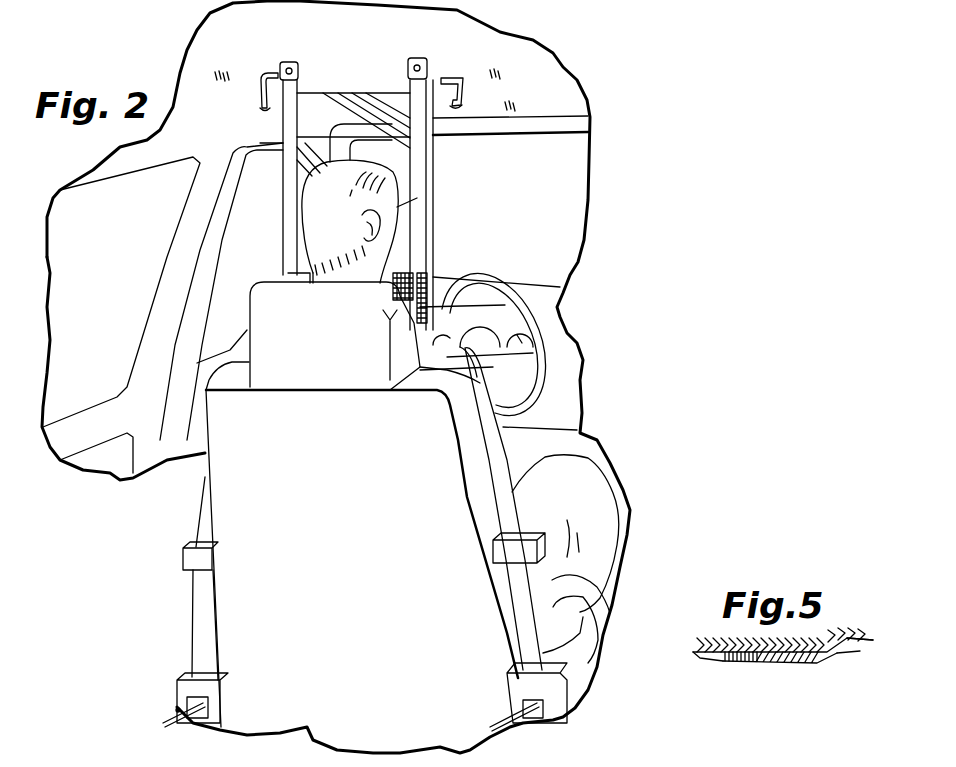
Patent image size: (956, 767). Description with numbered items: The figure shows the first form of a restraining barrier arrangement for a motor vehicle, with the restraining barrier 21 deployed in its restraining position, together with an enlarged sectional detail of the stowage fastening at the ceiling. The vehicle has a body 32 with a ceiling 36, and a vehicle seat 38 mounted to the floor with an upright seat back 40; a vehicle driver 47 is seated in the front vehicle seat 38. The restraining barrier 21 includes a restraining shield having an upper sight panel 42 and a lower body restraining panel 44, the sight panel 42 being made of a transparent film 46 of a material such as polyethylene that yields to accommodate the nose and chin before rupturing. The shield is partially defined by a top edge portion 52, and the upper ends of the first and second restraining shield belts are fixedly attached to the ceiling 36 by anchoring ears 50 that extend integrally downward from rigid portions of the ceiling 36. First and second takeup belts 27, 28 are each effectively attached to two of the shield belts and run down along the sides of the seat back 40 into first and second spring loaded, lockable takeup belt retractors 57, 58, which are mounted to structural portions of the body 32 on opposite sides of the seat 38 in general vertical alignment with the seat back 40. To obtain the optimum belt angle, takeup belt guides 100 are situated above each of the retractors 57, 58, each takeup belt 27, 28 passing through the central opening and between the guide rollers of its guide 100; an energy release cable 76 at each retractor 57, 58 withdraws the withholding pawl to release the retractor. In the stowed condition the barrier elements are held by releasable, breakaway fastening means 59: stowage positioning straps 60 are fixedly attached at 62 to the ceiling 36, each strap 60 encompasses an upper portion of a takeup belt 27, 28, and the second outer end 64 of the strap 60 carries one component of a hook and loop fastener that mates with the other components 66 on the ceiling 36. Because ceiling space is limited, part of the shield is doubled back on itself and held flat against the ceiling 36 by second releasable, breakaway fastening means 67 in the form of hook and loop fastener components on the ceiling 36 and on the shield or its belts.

In FIG. 2, the restraining barrier 21 is at (287, 213).
In FIG. 2, the first takeup belt 27 is at (200, 605).
In FIG. 5, the first takeup belt 27 is at (757, 662).
In FIG. 2, the second takeup belt 28 is at (510, 514).
In FIG. 2, the body 32 is at (557, 330).
In FIG. 2, the ceiling 36 is at (560, 100).
In FIG. 5, the ceiling 36 is at (830, 646).
In FIG. 2, the vehicle seat 38 is at (607, 630).
In FIG. 2, the seat back 40 is at (228, 466).
In FIG. 2, the sight panel 42 is at (313, 104).
In FIG. 2, the lower body restraining panel 44 is at (487, 147).
In FIG. 2, the transparent film 46 is at (367, 104).
In FIG. 2, the vehicle driver 47 is at (390, 182).
In FIG. 2, the anchoring ears 50 is at (284, 61).
In FIG. 2, the top edge portion 52 is at (350, 93).
In FIG. 2, the first takeup belt retractor 57 is at (204, 687).
In FIG. 2, the second takeup belt retractor 58 is at (513, 688).
In FIG. 2, the releasable breakaway fastening means 59 is at (252, 64).
In FIG. 5, the releasable breakaway fastening means 59 is at (798, 664).
In FIG. 2, the stowage positioning strap 60 is at (258, 96).
In FIG. 5, the stowage positioning strap 60 is at (773, 664).
In FIG. 2, the strap attachment 62 is at (480, 30).
In FIG. 5, the strap attachment 62 is at (853, 652).
In FIG. 2, the second outer end 64 is at (262, 110).
In FIG. 5, the second outer end 64 is at (727, 656).
In FIG. 2, the hook and loop fastener components 66 is at (200, 66).
In FIG. 2, the second releasable breakaway fastening means 67 is at (522, 102).
In FIG. 2, the energy release cable 76 is at (162, 713).
In FIG. 2, the takeup belt guide 100 is at (204, 558).